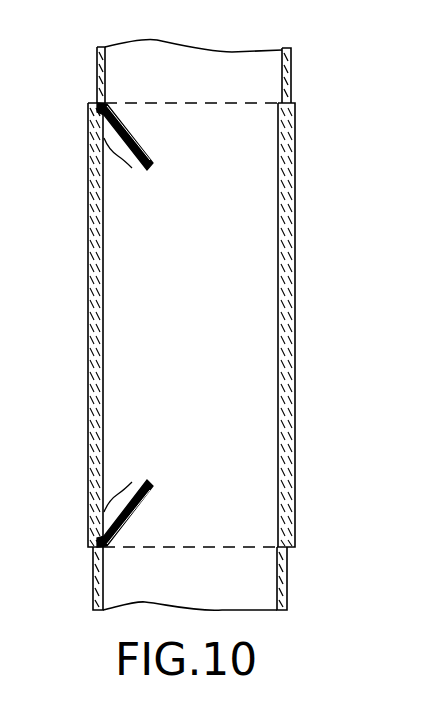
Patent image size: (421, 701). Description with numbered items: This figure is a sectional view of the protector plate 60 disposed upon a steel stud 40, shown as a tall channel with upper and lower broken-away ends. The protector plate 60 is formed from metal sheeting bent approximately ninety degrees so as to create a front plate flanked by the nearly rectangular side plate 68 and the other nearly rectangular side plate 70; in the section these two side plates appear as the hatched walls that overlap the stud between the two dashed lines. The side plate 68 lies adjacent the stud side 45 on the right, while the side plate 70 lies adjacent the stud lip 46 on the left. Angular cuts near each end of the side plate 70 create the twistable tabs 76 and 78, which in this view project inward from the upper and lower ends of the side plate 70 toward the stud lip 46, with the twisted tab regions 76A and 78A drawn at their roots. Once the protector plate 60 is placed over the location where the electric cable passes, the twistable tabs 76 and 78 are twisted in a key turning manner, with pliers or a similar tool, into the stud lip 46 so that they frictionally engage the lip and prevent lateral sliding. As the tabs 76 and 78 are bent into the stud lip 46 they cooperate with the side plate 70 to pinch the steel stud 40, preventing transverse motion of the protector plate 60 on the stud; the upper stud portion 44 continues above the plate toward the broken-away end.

The steel stud 40 is at (289, 598).
The tubular member upper portion 44 is at (241, 62).
The stud side 45 is at (287, 568).
The stud lip 46 is at (118, 100).
The protector plate 60 is at (210, 325).
The side plate 68 is at (295, 342).
The side plate 70 is at (88, 315).
The twistable tab 76 is at (152, 486).
The lower fin bend 76A is at (104, 500).
The twistable tab 78 is at (152, 165).
The upper fin bend 78A is at (108, 148).